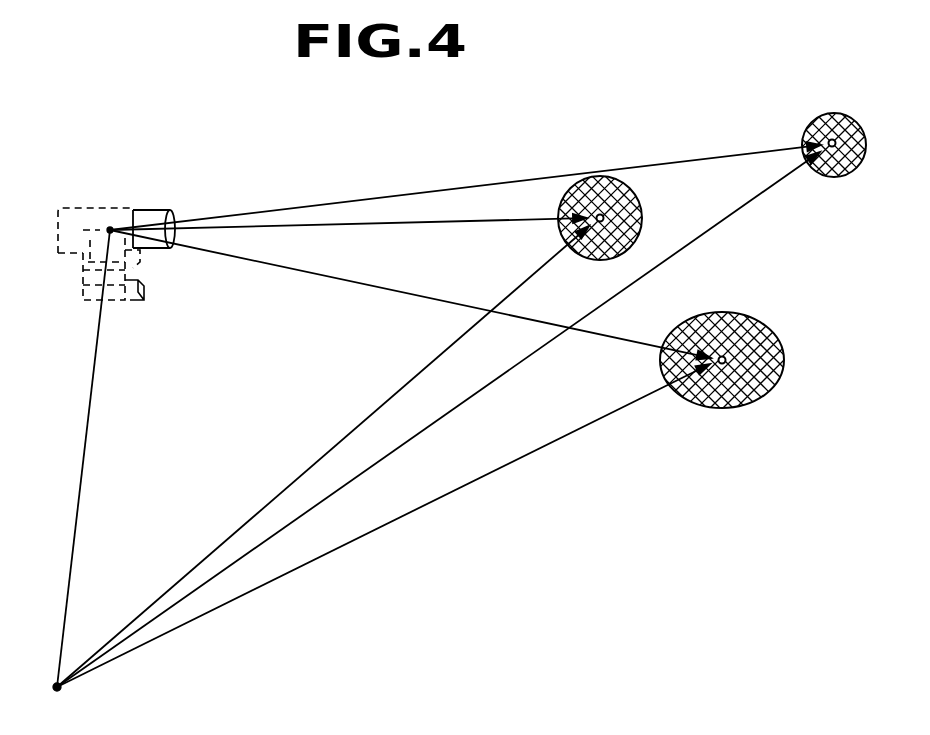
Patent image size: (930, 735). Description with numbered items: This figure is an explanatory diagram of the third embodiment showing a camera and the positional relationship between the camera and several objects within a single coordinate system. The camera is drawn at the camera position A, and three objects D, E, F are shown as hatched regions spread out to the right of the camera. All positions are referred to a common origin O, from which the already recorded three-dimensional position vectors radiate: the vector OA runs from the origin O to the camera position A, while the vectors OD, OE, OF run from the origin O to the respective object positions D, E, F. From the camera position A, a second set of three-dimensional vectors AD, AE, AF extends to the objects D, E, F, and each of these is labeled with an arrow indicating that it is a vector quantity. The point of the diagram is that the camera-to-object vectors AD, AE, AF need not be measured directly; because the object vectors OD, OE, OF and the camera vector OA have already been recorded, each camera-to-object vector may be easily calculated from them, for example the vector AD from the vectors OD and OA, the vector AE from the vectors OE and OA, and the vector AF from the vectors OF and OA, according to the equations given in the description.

The camera position A is at (116, 234).
The object D is at (612, 218).
The object E is at (842, 154).
The object F is at (722, 372).
The origin of coordinate system O is at (41, 698).
The three-dimensional vector of camera position OA is at (58, 460).
The three-dimensional vector of object position OD is at (321, 410).
The three-dimensional vector of object position OE is at (497, 410).
The three-dimensional vector of object position OF is at (449, 530).
The three-dimensional vector from camera position to object AD is at (485, 231).
The three-dimensional vector from camera position to object AE is at (518, 138).
The three-dimensional vector from camera position to object AF is at (317, 287).